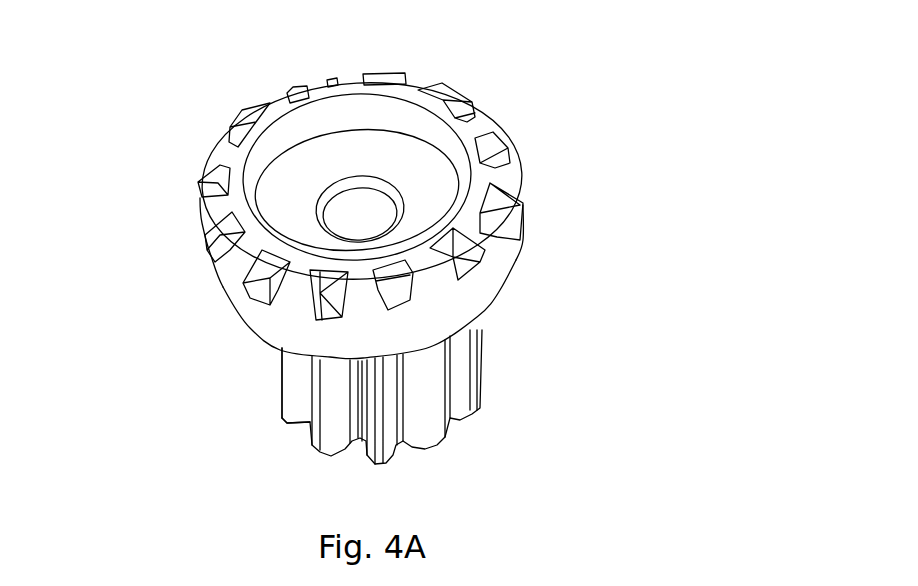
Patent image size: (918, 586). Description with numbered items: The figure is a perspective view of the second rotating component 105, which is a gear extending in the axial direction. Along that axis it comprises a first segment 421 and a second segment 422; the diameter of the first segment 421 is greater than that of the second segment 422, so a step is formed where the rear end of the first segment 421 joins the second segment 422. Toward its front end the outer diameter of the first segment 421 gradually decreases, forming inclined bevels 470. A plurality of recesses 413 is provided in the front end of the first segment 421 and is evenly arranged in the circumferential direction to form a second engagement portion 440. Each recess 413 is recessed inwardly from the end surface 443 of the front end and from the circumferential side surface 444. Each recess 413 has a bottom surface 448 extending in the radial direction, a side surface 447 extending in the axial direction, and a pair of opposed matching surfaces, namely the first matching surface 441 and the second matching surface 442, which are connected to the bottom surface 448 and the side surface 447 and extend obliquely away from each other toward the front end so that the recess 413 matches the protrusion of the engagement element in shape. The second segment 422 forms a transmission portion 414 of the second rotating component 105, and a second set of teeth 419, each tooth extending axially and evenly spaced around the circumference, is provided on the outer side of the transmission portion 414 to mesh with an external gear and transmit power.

The second rotating component 105 is at (698, 125).
The second engagement portion 440 is at (218, 183).
The inclined bevels 470 is at (503, 127).
The recesses 413 is at (517, 183).
The side surface 444 is at (517, 237).
The end surface 443 is at (497, 253).
The second matching surface 442 is at (457, 290).
The bottom surface 448 is at (352, 283).
The side surface 447 is at (277, 346).
The first matching surface 441 is at (280, 348).
The second segment 422 is at (293, 390).
The first segment 421 is at (232, 293).
The second set of teeth 419 is at (467, 353).
The transmission portion 414 is at (372, 388).